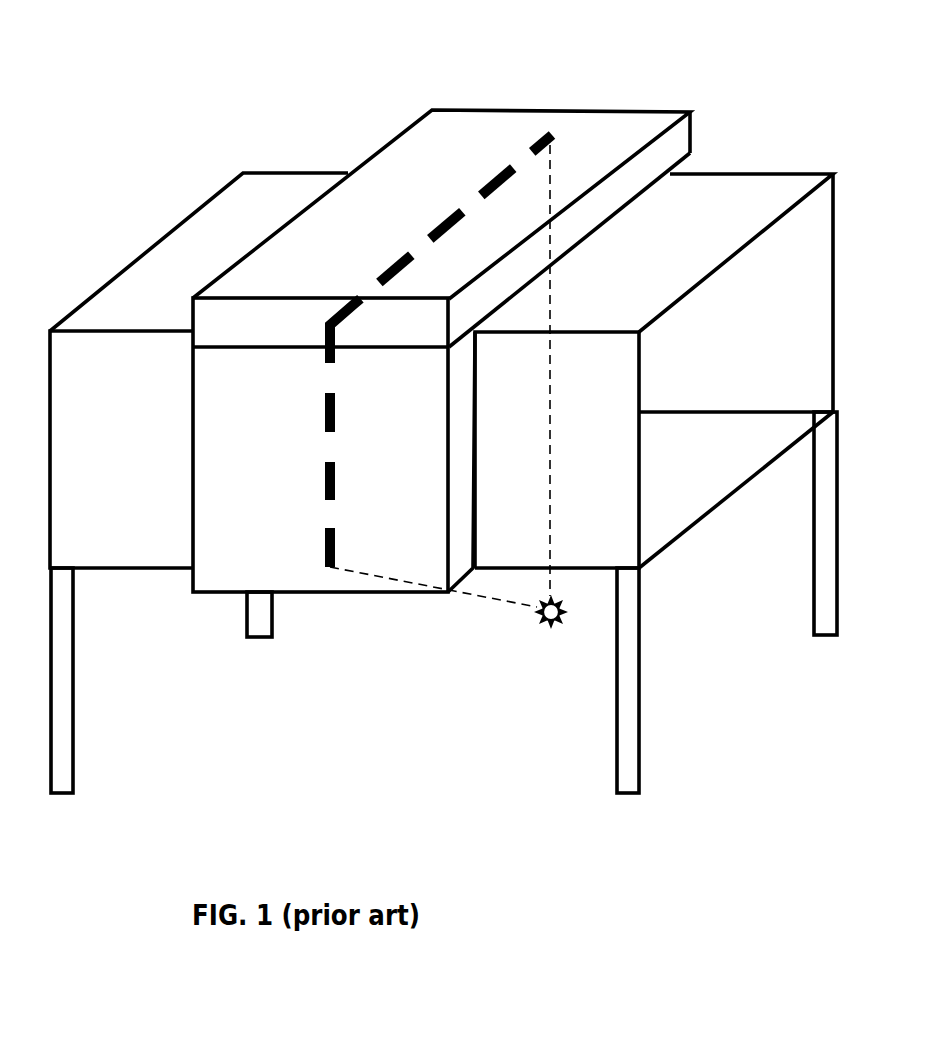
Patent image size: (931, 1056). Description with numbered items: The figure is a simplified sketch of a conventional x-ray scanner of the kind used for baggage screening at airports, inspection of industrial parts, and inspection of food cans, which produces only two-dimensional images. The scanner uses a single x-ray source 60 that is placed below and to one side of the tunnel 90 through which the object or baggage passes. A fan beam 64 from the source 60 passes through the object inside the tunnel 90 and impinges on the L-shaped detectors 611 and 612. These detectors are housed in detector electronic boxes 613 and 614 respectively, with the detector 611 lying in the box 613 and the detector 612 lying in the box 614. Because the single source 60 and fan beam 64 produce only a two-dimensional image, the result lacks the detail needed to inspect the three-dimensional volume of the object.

The x-ray source 60 is at (542, 637).
The fan beam 64 is at (508, 588).
The tunnel 90 is at (702, 393).
The detector 611 is at (453, 198).
The detector 612 is at (317, 493).
The detector electronic box 613 is at (407, 150).
The detector electronic box 614 is at (223, 565).